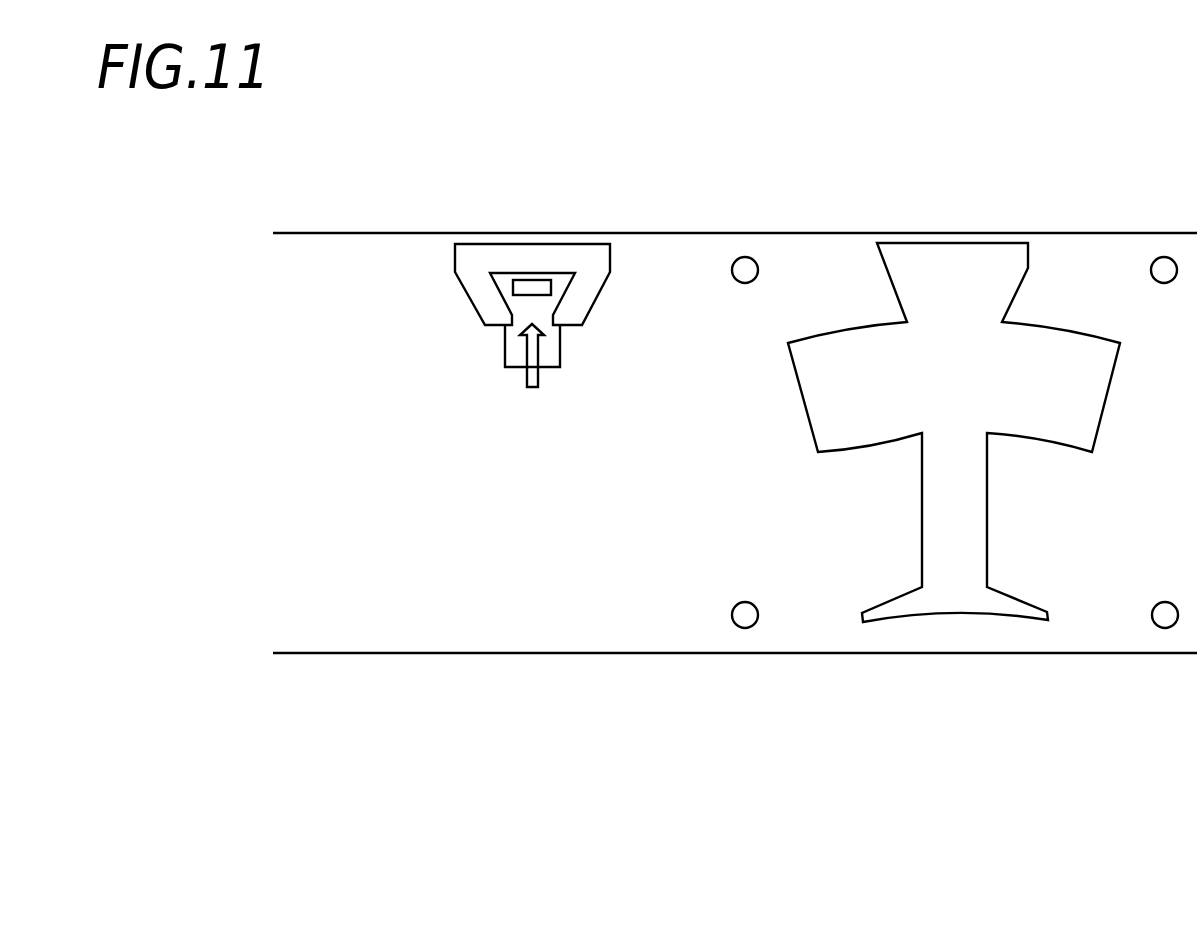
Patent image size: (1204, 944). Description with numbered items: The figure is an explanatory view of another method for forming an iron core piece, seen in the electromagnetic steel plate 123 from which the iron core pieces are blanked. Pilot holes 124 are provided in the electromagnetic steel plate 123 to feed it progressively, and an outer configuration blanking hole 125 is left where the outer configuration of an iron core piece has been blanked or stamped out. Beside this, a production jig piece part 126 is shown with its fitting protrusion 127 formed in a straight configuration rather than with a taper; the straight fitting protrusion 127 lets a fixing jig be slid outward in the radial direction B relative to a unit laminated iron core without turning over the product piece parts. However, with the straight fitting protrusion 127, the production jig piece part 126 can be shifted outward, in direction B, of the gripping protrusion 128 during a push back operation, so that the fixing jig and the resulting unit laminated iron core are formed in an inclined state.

The electromagnetic steel plate 123 is at (1086, 219).
The pilot hole 124 is at (744, 257).
The outer configuration blanking hole 125 is at (961, 630).
The production jig piece part 126 is at (542, 256).
The fitting protrusion 127 is at (552, 348).
The gripping protrusion 128 is at (503, 283).